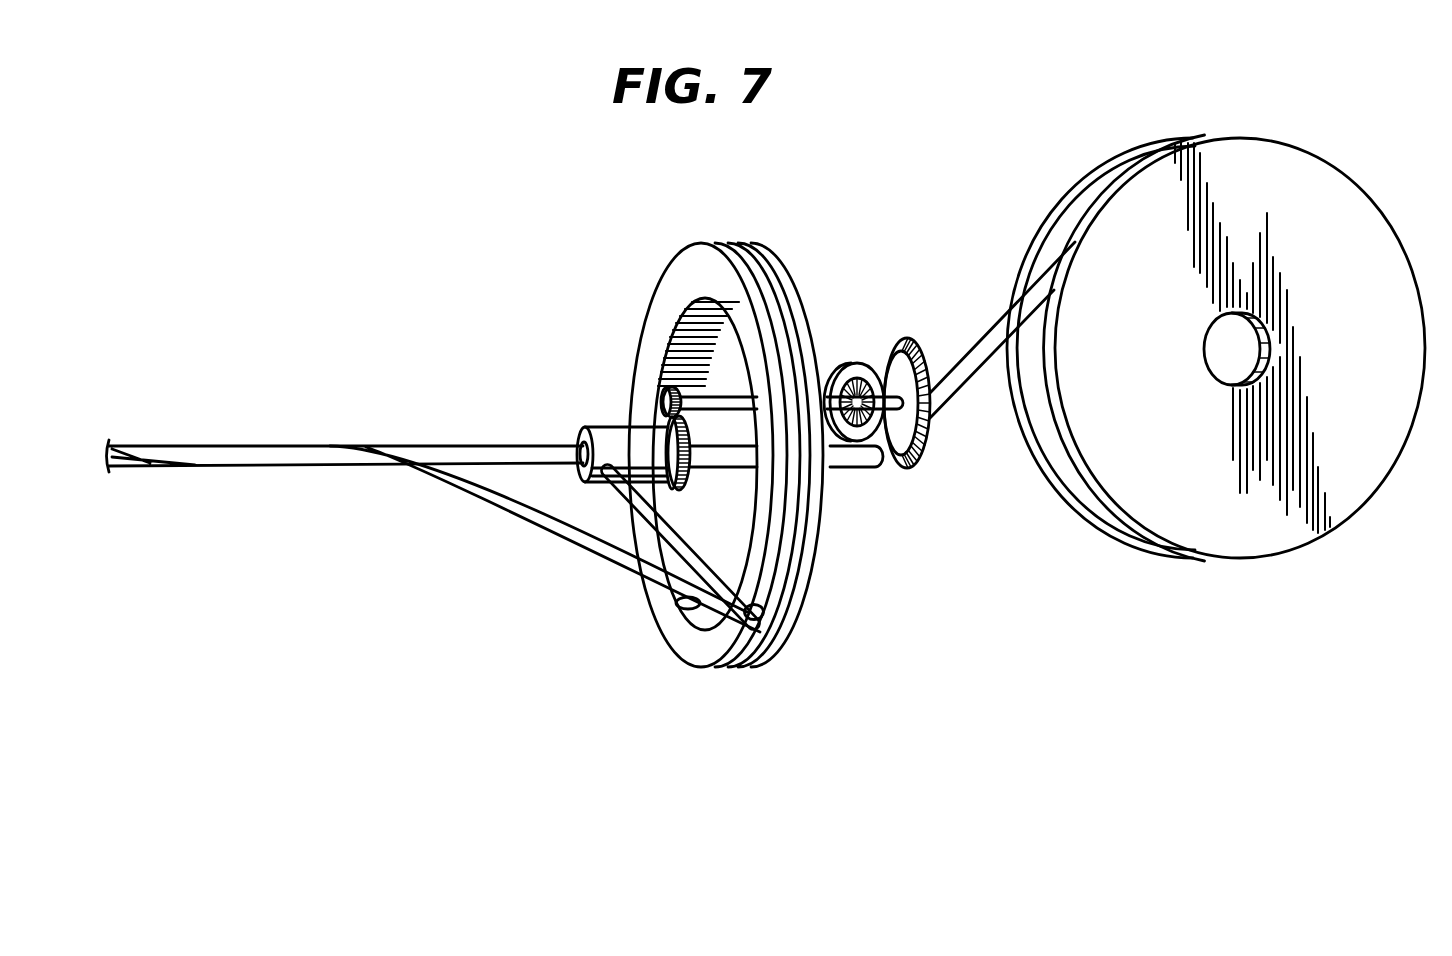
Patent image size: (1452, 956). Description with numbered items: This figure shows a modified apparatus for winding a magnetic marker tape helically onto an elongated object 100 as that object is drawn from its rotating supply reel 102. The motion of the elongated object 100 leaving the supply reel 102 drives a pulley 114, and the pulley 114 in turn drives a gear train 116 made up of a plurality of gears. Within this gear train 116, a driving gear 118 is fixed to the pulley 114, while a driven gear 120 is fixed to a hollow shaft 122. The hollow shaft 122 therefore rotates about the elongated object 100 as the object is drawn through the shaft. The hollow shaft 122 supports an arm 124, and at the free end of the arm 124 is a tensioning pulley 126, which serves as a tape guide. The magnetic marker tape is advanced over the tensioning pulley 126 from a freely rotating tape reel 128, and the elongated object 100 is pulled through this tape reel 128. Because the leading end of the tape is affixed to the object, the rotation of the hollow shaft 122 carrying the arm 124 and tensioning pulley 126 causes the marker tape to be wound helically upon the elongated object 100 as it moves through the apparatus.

The elongated object 100 is at (230, 436).
The rotating supply reel 102 is at (1238, 150).
The pulley 114 is at (870, 368).
The gear train 116 is at (949, 440).
The driving gear 118 is at (870, 432).
The driven gear 120 is at (652, 423).
The hollow shaft 122 is at (580, 425).
The arm 124 is at (627, 503).
The tensioning pulley 126 is at (750, 634).
The tape reel 128 is at (652, 331).